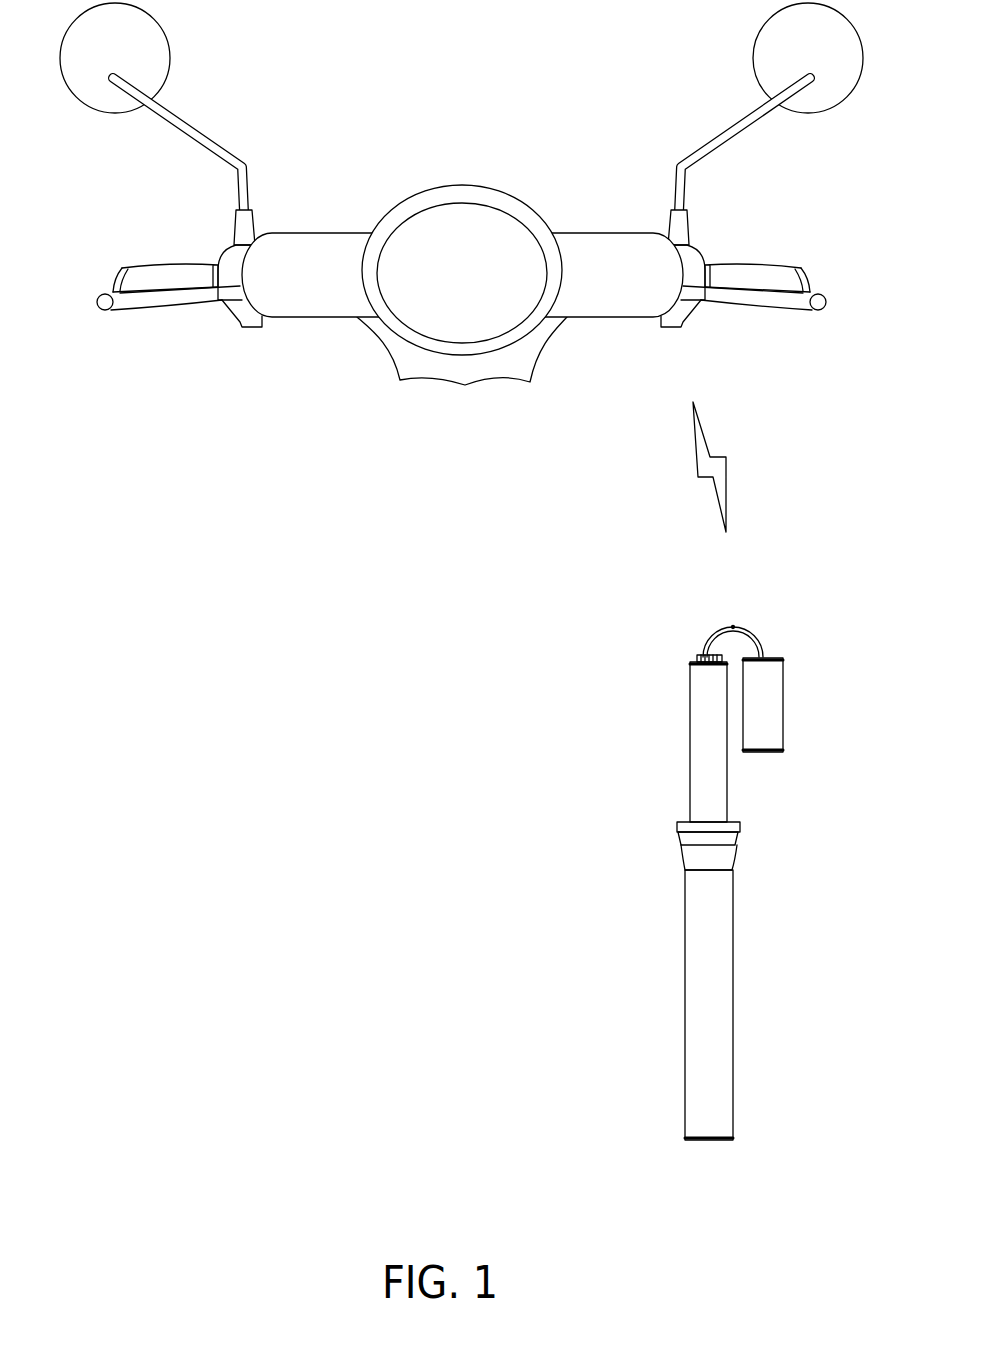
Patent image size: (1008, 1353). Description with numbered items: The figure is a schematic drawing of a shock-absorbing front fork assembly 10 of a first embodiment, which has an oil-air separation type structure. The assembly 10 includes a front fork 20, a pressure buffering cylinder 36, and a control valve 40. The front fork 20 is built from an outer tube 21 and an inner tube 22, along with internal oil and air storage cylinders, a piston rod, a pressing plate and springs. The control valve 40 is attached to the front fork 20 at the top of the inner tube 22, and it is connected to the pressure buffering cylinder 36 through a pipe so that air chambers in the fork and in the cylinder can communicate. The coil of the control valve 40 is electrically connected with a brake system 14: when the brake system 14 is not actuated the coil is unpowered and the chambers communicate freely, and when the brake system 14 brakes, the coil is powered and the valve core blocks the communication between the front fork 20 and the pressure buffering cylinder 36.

The shock-absorbing front fork assembly 10 is at (718, 822).
The brake system 14 is at (758, 315).
The front fork 20 is at (708, 897).
The outer tube 21 is at (693, 977).
The inner tube 22 is at (700, 777).
The pressure buffering cylinder 36 is at (773, 713).
The control valve 40 is at (687, 627).